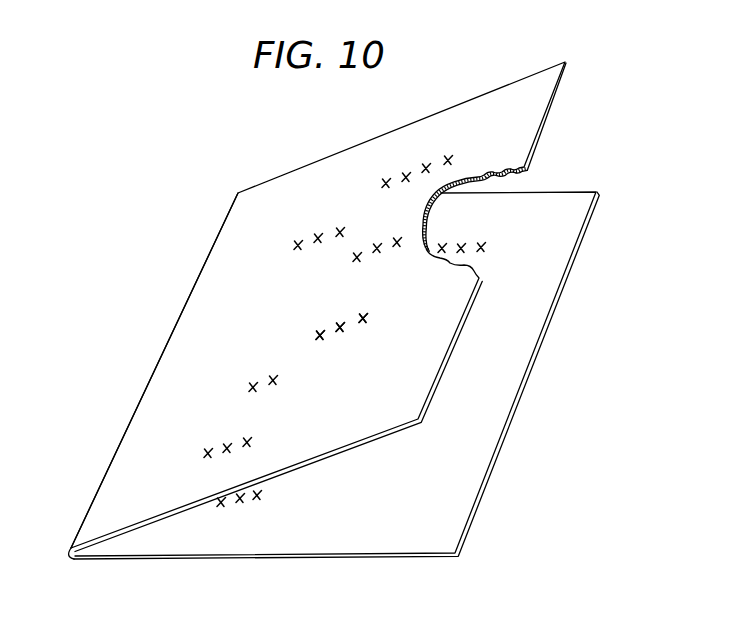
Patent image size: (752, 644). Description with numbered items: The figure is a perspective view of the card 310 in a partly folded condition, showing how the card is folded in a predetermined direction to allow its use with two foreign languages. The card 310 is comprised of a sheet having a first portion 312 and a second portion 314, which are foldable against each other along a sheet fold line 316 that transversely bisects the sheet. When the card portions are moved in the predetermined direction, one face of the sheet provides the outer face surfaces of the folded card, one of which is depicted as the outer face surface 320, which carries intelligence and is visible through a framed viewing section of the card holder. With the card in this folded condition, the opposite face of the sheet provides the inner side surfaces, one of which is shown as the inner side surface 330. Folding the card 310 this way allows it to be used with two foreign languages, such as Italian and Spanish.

The card 310 is at (134, 338).
The first portion 312 is at (374, 541).
The second portion 314 is at (321, 437).
The sheet fold line 316 is at (124, 433).
The outer face surface 320 is at (394, 368).
The inner side surface 330 is at (425, 489).